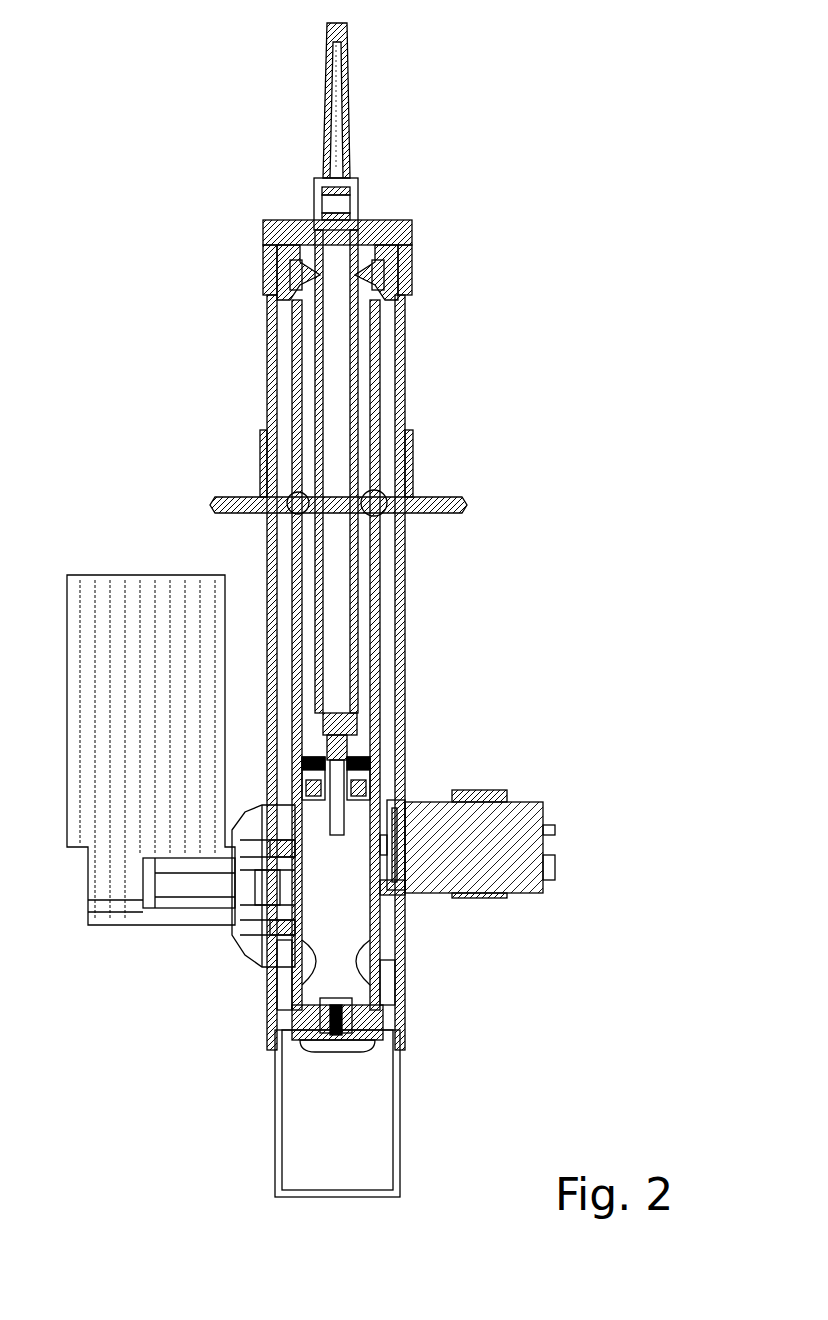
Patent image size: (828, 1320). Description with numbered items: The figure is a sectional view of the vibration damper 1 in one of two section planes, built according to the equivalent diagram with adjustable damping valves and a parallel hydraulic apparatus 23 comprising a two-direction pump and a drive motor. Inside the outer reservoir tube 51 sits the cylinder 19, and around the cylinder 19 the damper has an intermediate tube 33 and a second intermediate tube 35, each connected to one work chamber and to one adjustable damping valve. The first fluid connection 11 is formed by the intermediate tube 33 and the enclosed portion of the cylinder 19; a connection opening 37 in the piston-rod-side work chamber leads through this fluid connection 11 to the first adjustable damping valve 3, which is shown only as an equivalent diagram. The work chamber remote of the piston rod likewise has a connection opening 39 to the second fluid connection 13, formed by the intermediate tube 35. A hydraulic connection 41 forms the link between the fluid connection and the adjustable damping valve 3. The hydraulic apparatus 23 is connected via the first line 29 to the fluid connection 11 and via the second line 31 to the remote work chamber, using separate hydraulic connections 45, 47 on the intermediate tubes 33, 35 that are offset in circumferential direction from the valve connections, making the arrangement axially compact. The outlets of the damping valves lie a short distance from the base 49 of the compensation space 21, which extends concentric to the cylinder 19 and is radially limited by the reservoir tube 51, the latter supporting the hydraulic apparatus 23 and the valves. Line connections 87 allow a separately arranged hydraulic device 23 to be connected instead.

The vibration damper 1 is at (525, 150).
The adjustable damping valve 3 is at (523, 787).
The fluid connection 11 is at (385, 639).
The fluid connection 13 is at (290, 975).
The cylinder 19 is at (380, 316).
The compensation space 21 is at (393, 995).
The hydraulic apparatus 23 is at (168, 962).
The first line 29 is at (147, 925).
The second line 31 is at (200, 908).
The intermediate tube 33 is at (382, 597).
The intermediate tube 35 is at (387, 975).
The connection opening 37 is at (370, 498).
The connection opening 39 is at (382, 957).
The hydraulic connection 41 is at (403, 893).
The hydraulic connection 45 is at (290, 825).
The hydraulic connection 47 is at (267, 968).
The base 49 is at (345, 1050).
The reservoir tube 51 is at (405, 368).
The line connections 87 is at (440, 800).